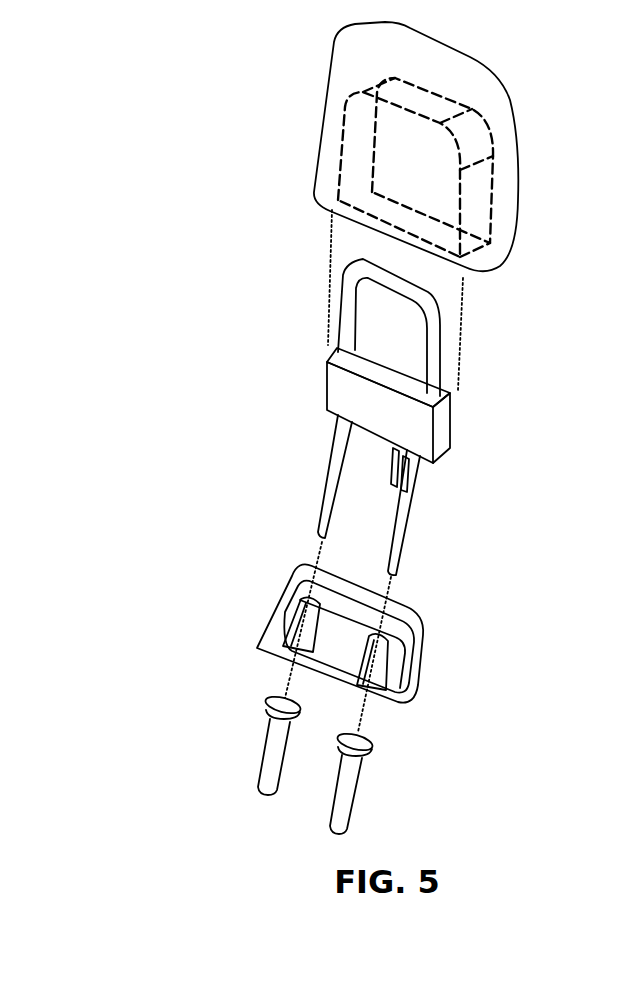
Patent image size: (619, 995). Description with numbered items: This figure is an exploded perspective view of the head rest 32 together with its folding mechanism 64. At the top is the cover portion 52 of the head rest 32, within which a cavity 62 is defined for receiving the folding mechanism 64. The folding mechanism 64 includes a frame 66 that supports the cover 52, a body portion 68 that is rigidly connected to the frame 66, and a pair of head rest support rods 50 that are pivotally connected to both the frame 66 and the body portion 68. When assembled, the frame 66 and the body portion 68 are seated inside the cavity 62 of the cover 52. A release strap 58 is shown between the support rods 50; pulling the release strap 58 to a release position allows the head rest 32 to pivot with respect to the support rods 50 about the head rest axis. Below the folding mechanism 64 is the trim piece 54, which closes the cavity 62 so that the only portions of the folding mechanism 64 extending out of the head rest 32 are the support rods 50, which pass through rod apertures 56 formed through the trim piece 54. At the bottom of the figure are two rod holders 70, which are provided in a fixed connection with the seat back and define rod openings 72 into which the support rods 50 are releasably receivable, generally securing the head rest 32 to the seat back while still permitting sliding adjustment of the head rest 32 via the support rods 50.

The head rest 32 is at (189, 194).
The cover portion 52 is at (494, 76).
The cavity 62 is at (497, 184).
The folding mechanism 64 is at (452, 415).
The frame 66 is at (441, 307).
The body portion 68 is at (327, 377).
The head rest support rods 50 is at (333, 470).
The release strap 58 is at (397, 487).
The trim piece 54 is at (400, 602).
The rod apertures 56 is at (298, 622).
The rod holders 70 is at (262, 772).
The rod openings 72 is at (281, 700).